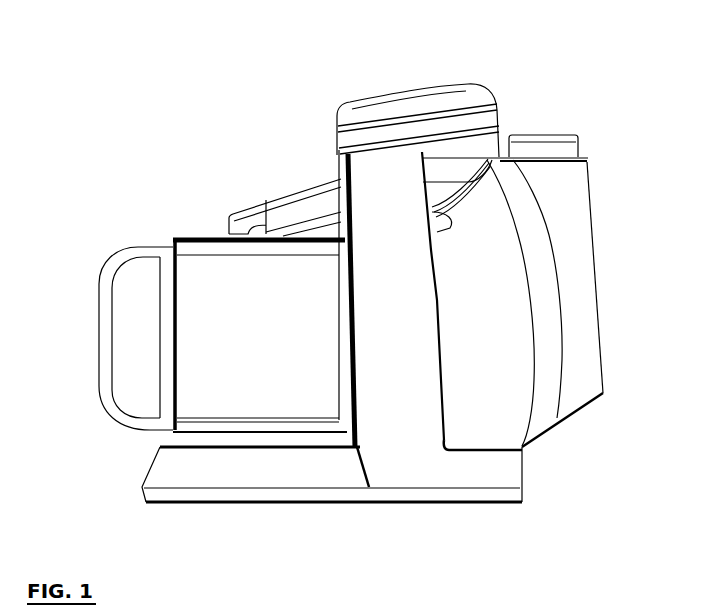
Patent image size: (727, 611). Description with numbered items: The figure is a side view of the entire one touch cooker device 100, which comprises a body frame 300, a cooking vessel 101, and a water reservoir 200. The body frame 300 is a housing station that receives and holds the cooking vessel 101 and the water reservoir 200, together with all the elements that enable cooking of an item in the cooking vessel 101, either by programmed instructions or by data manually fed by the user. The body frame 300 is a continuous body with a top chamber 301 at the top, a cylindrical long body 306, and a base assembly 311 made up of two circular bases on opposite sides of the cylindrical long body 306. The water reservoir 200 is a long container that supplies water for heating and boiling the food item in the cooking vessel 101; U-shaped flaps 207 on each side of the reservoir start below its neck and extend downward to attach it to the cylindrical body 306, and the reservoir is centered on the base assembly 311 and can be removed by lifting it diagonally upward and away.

The one touch cooker device 100 is at (118, 100).
The cooking vessel 101 is at (215, 357).
The body frame 300 is at (333, 160).
The top chamber 301 is at (438, 125).
The cylindrical long body 306 is at (405, 190).
The water reservoir 200 is at (577, 205).
The U-shaped flaps 207 is at (493, 330).
The base assembly 311 is at (402, 497).